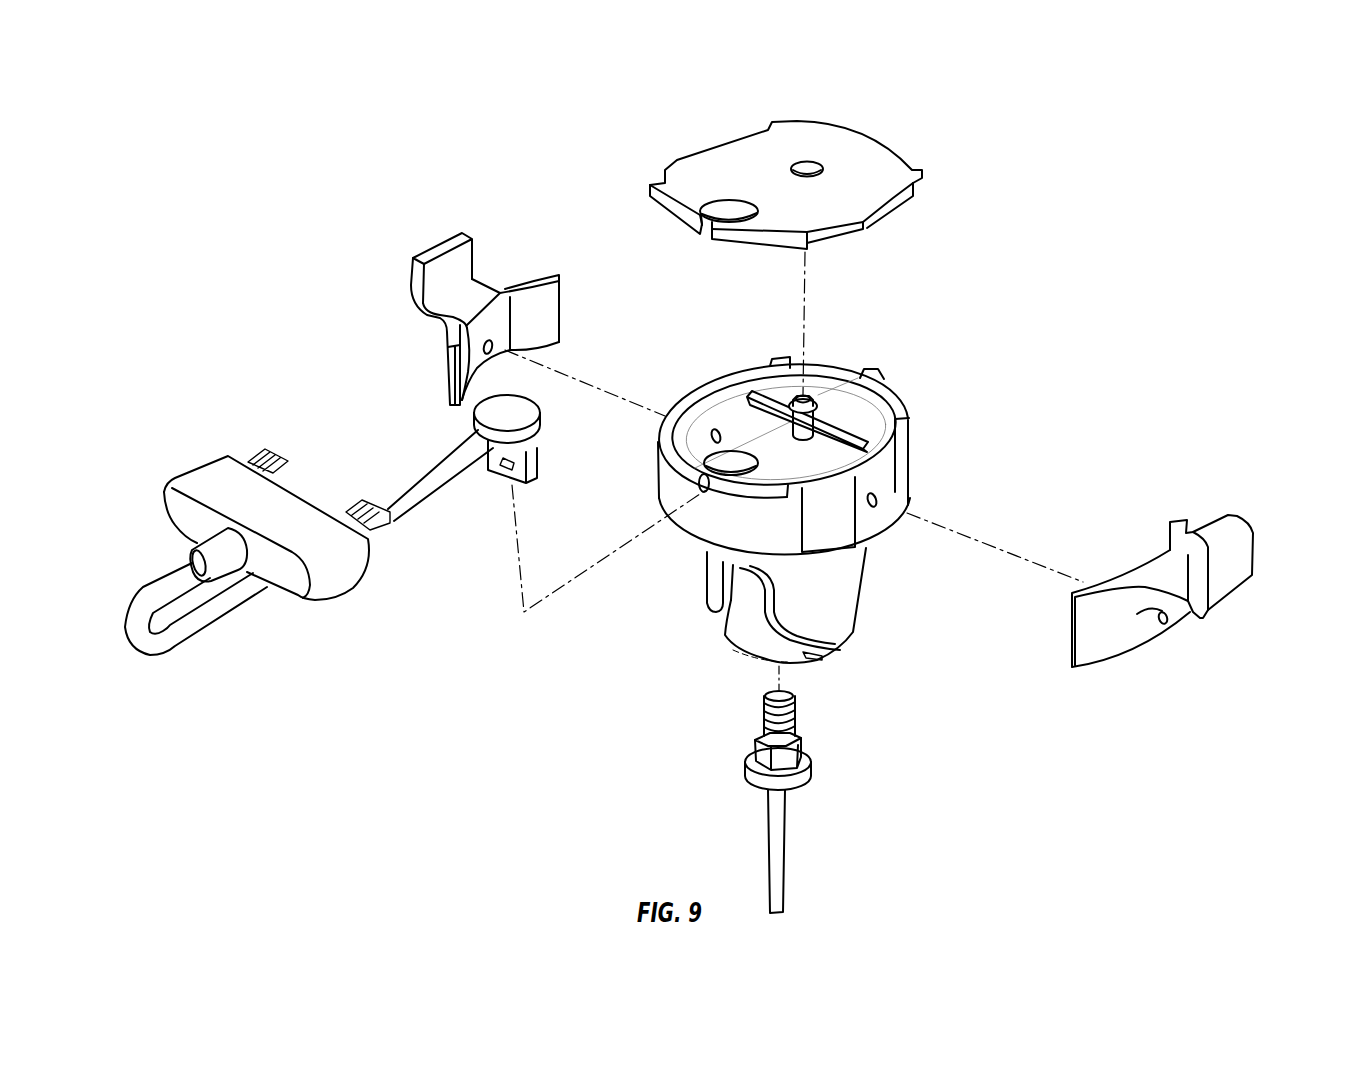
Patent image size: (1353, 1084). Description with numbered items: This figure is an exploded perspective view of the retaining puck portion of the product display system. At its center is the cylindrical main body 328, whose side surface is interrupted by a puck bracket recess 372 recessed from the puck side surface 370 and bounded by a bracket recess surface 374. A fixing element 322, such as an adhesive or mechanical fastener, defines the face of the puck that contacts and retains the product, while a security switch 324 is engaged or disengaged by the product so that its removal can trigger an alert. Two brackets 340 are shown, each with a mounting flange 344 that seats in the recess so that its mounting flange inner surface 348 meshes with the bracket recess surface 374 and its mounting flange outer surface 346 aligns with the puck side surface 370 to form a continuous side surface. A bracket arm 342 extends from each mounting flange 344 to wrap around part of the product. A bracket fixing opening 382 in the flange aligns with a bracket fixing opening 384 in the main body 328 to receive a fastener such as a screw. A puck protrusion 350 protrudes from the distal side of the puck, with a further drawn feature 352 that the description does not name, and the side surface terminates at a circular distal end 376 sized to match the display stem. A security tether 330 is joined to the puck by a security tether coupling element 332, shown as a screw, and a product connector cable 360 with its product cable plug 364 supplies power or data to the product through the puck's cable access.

The fixing element 322 is at (873, 195).
The security switch 324 is at (814, 405).
The cylindrical main body 328 is at (788, 484).
The security tether 330 is at (782, 831).
The security tether coupling element 332 is at (797, 713).
The bracket 340 is at (797, 455).
The bracket arm 342 is at (417, 263).
The mounting flange 344 is at (549, 301).
The mounting flange outer surface 346 is at (1133, 634).
The mounting flange inner surface 348 is at (542, 332).
The puck protrusion 350 is at (779, 629).
The lower body wall 352 is at (722, 640).
The product connector cable 360 is at (332, 525).
The product cable plug 364 is at (491, 463).
The puck side surface 370 is at (742, 565).
The puck bracket recess 372 is at (882, 468).
The bracket recess surface 374 is at (883, 495).
The distal end 376 is at (870, 542).
The bracket fixing opening 382 is at (486, 351).
The bracket fixing opening 384 is at (875, 507).